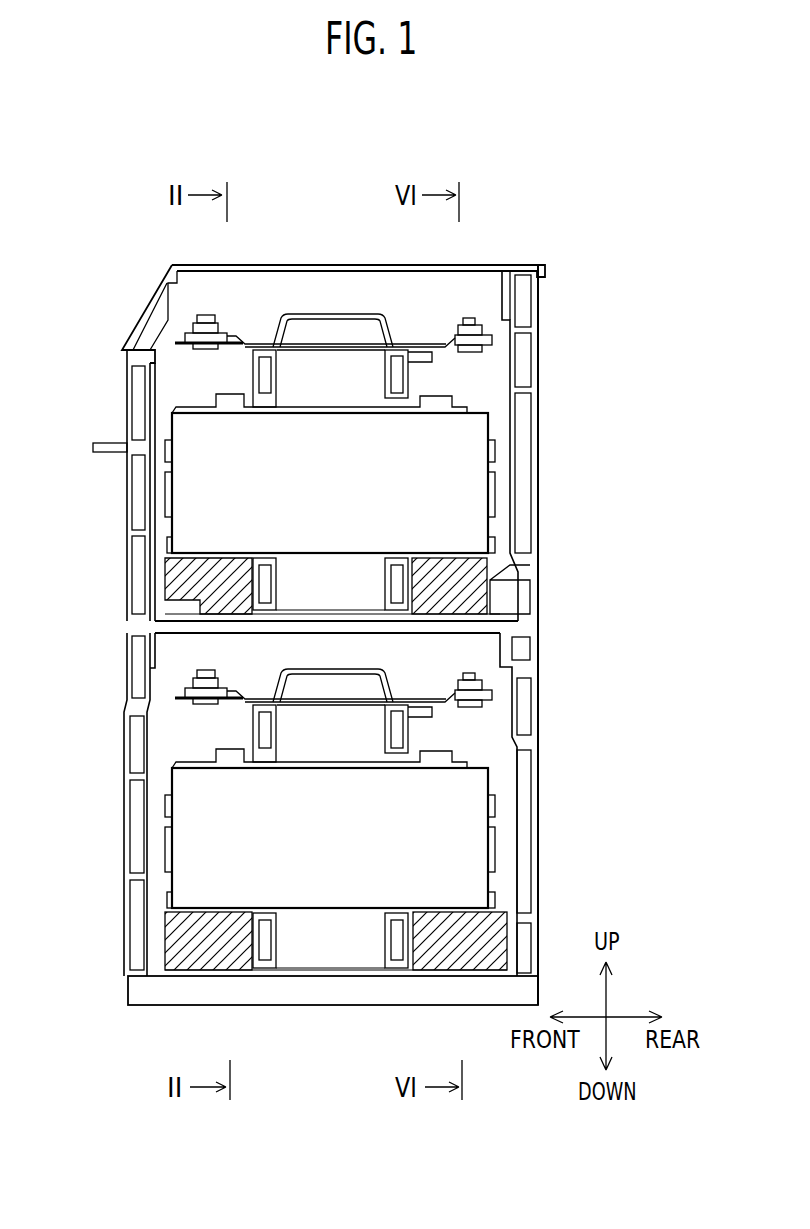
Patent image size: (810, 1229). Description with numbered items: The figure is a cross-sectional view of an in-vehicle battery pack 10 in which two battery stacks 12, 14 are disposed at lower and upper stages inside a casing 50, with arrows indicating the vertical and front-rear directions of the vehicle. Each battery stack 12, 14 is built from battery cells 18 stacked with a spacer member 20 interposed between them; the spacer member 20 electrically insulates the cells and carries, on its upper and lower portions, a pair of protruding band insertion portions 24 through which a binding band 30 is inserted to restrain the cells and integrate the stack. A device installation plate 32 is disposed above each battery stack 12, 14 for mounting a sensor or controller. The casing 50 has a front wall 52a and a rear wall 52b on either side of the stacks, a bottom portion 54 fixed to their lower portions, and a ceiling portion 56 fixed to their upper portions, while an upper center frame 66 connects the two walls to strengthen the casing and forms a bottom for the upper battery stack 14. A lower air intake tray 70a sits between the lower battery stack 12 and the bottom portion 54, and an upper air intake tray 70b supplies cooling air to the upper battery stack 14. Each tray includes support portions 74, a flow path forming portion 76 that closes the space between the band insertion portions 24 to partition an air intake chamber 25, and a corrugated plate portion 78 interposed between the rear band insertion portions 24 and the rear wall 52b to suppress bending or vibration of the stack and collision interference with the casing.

The in-vehicle battery pack 10 is at (335, 615).
The battery stack 12 is at (386, 706).
The battery stack 14 is at (386, 351).
The battery cell 18 is at (326, 651).
The spacer member 20 is at (542, 656).
The band insertion portion 24 is at (302, 659).
The air intake chamber 25 is at (363, 769).
The binding band 30 is at (331, 665).
The device installation plate 32 is at (412, 459).
The casing 50 is at (145, 288).
The front wall 52a is at (107, 663).
The rear wall 52b is at (555, 635).
The bottom portion 54 is at (333, 1026).
The ceiling portion 56 is at (358, 242).
The upper center frame 66 is at (294, 643).
The lower air intake tray 70a is at (549, 893).
The upper air intake tray 70b is at (549, 564).
The support portion 74 is at (162, 806).
The flow path forming portion 76 is at (336, 832).
The corrugated plate portion 78 is at (504, 806).